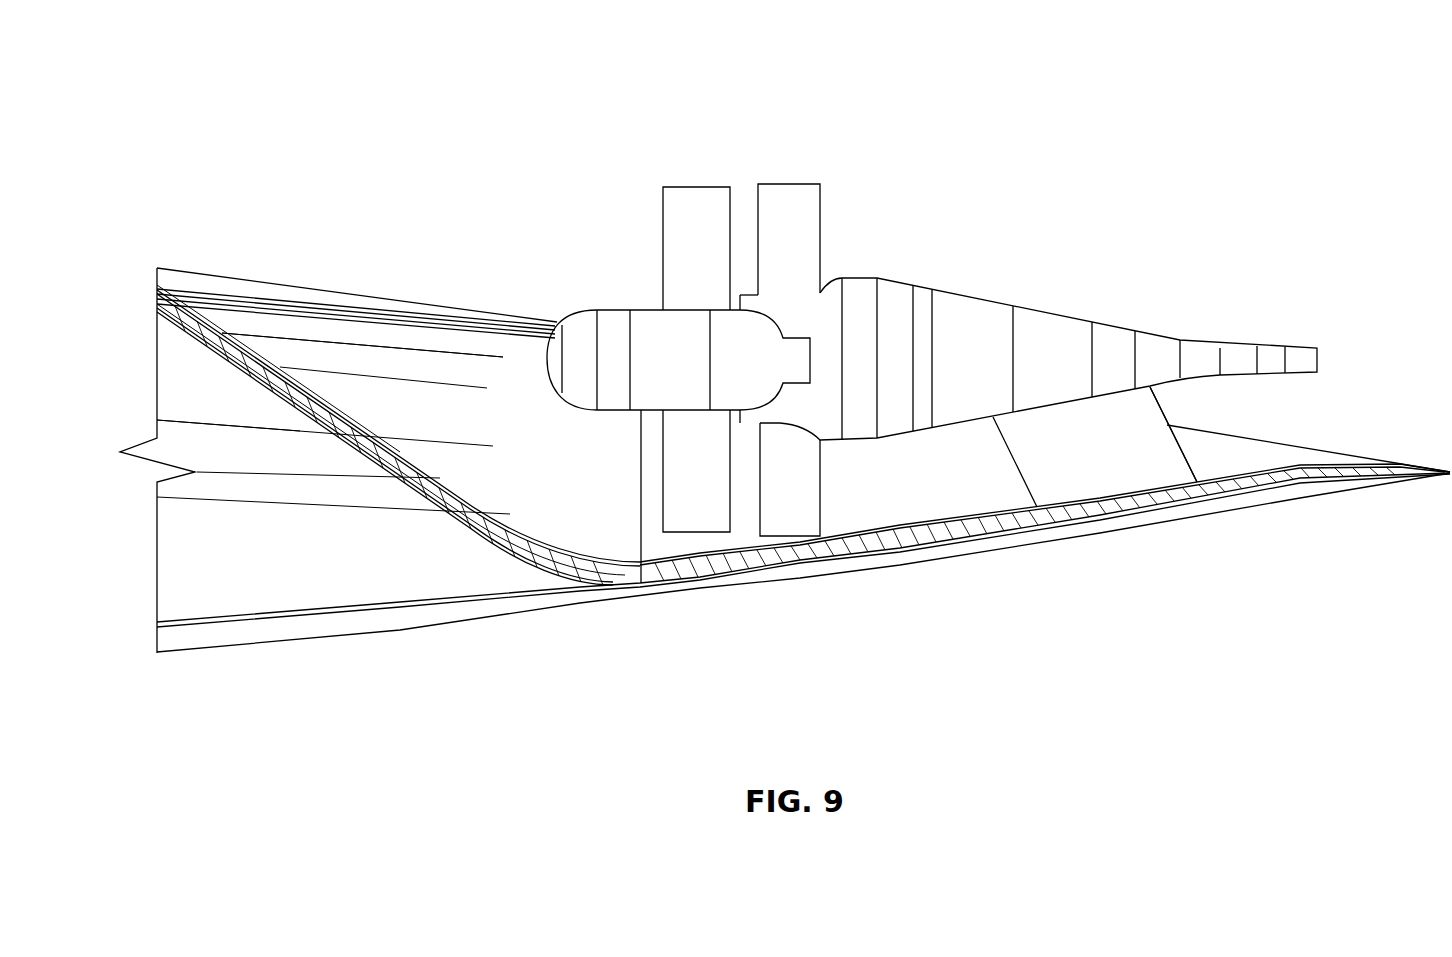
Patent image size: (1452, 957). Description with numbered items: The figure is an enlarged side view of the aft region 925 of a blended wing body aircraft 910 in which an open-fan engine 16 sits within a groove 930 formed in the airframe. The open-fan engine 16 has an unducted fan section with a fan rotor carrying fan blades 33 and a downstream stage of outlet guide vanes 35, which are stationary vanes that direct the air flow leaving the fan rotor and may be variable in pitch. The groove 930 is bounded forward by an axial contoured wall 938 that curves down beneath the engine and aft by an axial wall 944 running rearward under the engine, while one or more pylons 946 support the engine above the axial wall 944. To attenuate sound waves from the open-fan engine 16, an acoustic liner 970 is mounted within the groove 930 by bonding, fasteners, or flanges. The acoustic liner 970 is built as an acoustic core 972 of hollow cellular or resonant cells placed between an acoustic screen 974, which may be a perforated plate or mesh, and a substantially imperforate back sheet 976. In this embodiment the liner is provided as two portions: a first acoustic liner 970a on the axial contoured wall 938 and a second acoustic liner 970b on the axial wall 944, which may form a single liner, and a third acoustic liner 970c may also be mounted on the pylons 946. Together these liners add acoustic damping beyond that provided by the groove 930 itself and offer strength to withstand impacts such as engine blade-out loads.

The blended wing body aircraft 910 is at (231, 156).
The aft region 925 is at (998, 350).
The open-fan engine 16 is at (921, 287).
The fan blades 33 is at (690, 187).
The outlet guide vanes 35 is at (796, 184).
The groove 930 is at (522, 377).
The acoustic liner 970 is at (353, 356).
The first acoustic liner 970a is at (293, 355).
The second acoustic liner 970b is at (1331, 457).
The third acoustic liner 970c is at (1174, 466).
The acoustic core 972 is at (183, 322).
The acoustic screen 974 is at (233, 338).
The back sheet 976 is at (203, 349).
The axial contoured wall 938 is at (453, 493).
The axial wall 944 is at (876, 527).
The pylon 946 is at (1170, 405).